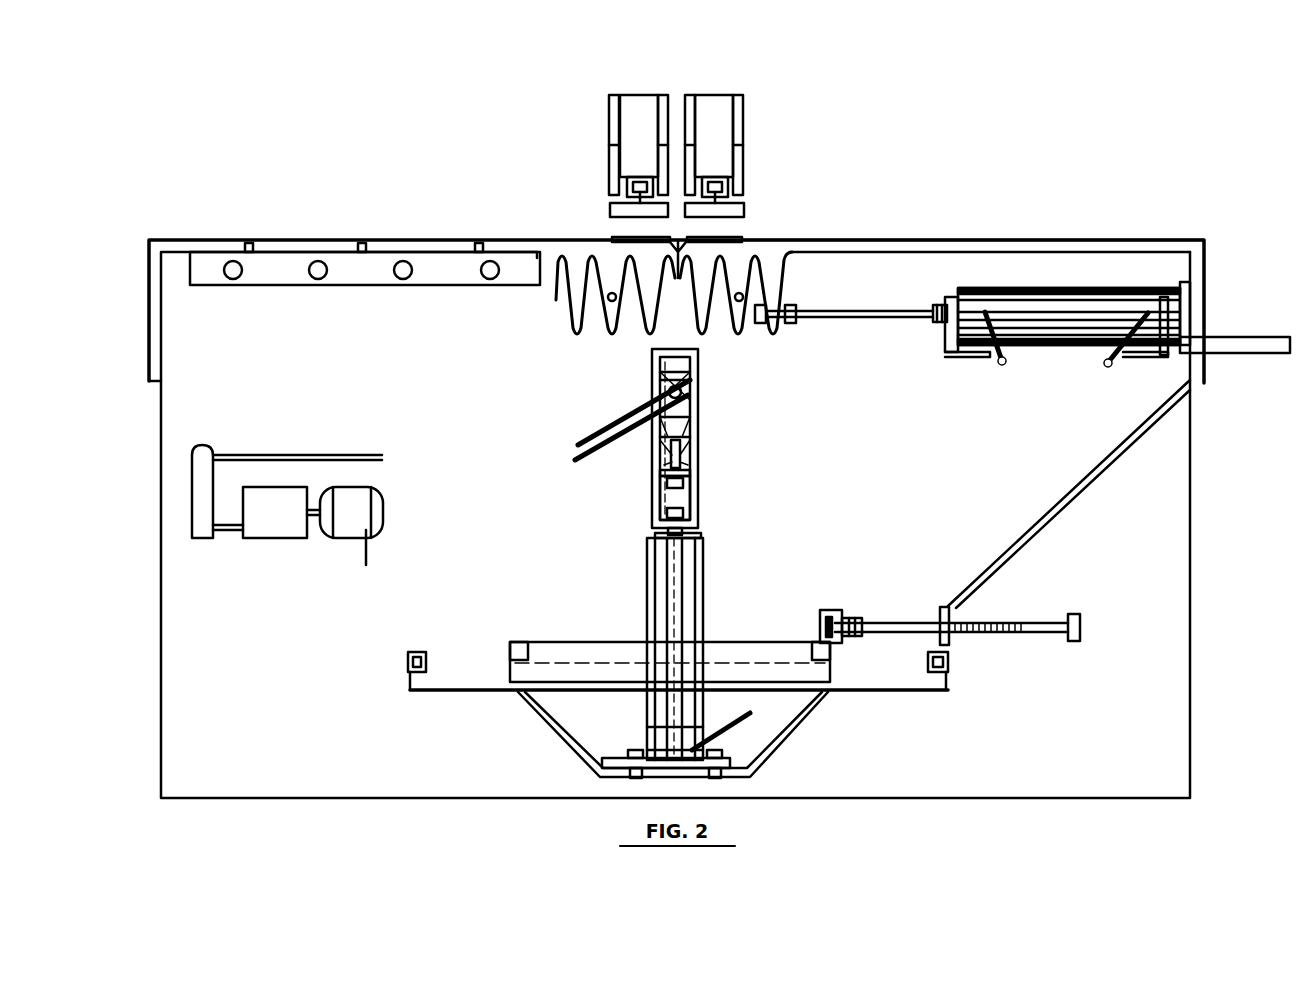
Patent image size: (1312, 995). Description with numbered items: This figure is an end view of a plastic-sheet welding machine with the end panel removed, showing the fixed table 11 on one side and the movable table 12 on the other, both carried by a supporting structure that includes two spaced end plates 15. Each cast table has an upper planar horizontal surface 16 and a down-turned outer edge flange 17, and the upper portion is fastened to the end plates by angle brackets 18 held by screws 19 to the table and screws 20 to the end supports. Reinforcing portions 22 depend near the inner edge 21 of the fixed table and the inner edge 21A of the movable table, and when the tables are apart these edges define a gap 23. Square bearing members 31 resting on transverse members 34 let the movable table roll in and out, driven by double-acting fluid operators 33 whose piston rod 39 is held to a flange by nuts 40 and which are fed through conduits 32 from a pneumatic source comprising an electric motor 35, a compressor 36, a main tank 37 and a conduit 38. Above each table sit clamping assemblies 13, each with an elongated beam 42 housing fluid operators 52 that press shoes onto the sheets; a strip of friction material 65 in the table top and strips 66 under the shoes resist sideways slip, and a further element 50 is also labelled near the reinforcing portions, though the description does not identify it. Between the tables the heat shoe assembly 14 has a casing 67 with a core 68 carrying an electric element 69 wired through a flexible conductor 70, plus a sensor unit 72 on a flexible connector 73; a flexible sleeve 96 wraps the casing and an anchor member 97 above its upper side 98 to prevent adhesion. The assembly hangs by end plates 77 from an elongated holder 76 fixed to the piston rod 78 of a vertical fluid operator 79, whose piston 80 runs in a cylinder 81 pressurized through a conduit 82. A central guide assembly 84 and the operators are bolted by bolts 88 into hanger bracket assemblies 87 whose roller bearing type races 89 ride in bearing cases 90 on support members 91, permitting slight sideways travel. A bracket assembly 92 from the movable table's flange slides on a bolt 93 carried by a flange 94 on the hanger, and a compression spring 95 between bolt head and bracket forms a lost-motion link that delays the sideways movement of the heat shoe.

The fixed table 11 is at (198, 215).
The movable table 12 is at (1140, 212).
The clamping assemblies 13 is at (674, 118).
The heat shoe assembly 14 is at (785, 442).
The end plates 15 is at (1100, 715).
The upper planar horizontal surface 16 is at (345, 238).
The outer edge flange 17 is at (150, 328).
The angle brackets 18 is at (380, 278).
The screws 19 is at (250, 258).
The screws 20 is at (320, 282).
The inner edge 21 is at (670, 240).
The inner edge 21A is at (684, 242).
The reinforcing portions 22 is at (590, 332).
The gap 23 is at (678, 278).
The bearing members 31 is at (1288, 352).
The conduits 32 is at (1010, 368).
The fluid operators 33 is at (1020, 290).
The transverse members 34 is at (975, 357).
The electric motor 35 is at (357, 538).
The compressor 36 is at (282, 538).
The main tank 37 is at (207, 452).
The conduit 38 is at (350, 458).
The piston rod 39 is at (890, 312).
The nuts 40 is at (788, 304).
The elongated beam 42 is at (610, 100).
The spring attachment 50 is at (612, 297).
The fluid operators 52 is at (646, 100).
The strip of friction material 65 is at (738, 240).
The strips 66 is at (612, 212).
The casing 67 is at (700, 420).
The core 68 is at (680, 382).
The electric element 69 is at (668, 392).
The flexible conductor 70 is at (580, 445).
The sensor unit 72 is at (700, 395).
The flexible connector 73 is at (578, 458).
The elongated holder 76 is at (652, 495).
The end plates 77 is at (700, 462).
The piston rod 78 is at (655, 535).
The fluid operator 79 is at (675, 649).
The piston 80 is at (662, 720).
The cylinder 81 is at (693, 590).
The conduit 82 is at (740, 715).
The central guide assembly 84 is at (605, 762).
The hanger bracket assemblies 87 is at (772, 728).
The bolts 88 is at (635, 752).
The roller bearing type races 89 is at (580, 665).
The bearing cases 90 is at (420, 695).
The support members 91 is at (408, 658).
The bracket assembly 92 is at (1105, 465).
The bolt 93 is at (1090, 628).
The flange 94 is at (828, 610).
The compression spring 95 is at (1020, 622).
The ledge brackets 96 is at (652, 360).
The anchor member 97 is at (660, 450).
The upper side 98 is at (700, 476).